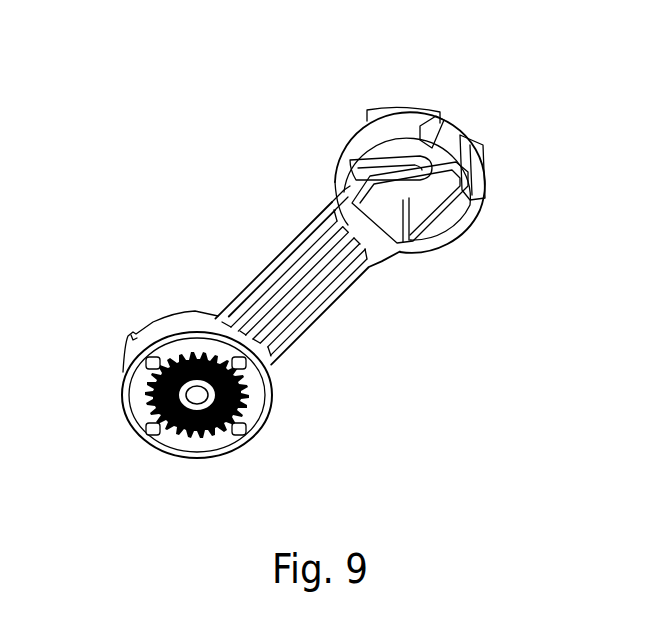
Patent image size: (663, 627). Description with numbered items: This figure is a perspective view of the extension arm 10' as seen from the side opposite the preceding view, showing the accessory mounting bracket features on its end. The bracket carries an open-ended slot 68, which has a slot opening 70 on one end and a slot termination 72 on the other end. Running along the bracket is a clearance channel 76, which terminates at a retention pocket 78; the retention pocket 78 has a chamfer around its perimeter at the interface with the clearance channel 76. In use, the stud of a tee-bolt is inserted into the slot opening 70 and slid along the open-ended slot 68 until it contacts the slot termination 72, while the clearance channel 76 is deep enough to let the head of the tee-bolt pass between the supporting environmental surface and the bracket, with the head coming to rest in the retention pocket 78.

The lighting device 10' is at (308, 247).
The open-ended slot 68 is at (430, 128).
The slot opening 70 is at (462, 126).
The slot termination 72 is at (337, 180).
The clearance channel 76 is at (470, 168).
The retention pocket 78 is at (418, 250).